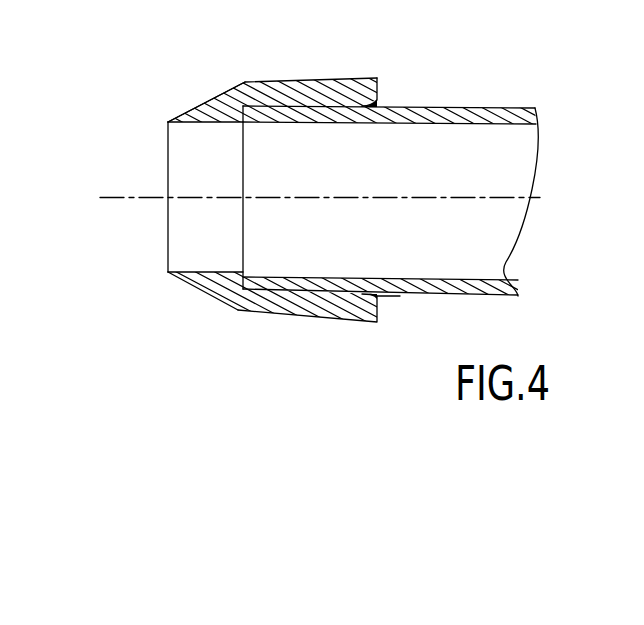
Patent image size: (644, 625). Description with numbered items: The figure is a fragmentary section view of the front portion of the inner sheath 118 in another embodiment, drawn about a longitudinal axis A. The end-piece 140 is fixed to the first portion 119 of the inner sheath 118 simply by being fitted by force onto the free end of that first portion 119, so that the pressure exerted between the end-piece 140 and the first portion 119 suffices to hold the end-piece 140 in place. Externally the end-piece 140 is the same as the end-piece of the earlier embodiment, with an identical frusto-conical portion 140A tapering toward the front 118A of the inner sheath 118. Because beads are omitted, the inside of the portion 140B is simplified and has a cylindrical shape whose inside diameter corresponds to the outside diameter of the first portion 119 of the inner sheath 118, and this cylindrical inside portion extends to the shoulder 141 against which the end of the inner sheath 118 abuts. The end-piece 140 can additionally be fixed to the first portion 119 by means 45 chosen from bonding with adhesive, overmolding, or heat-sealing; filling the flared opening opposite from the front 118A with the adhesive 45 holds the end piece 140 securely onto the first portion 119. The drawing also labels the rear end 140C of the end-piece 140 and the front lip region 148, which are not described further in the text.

The longitudinal axis A is at (104, 196).
The means for fixing / adhesive 45 is at (380, 298).
The inner sheath 118 is at (390, 151).
The front of the inner sheath 118A is at (168, 98).
The first portion of the inner sheath 119 is at (518, 107).
The end-piece 140 is at (266, 200).
The frusto-conical portion 140A is at (218, 104).
The portion of the end-piece 140B is at (358, 92).
The collar inner end 140C is at (362, 300).
The shoulder 141 is at (245, 284).
The collar lip 148 is at (215, 270).